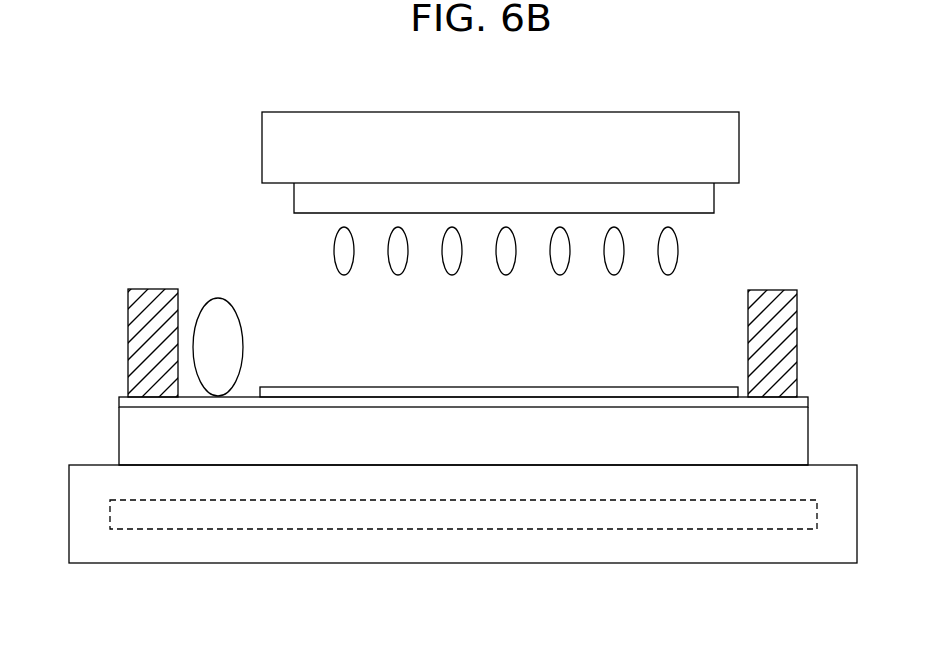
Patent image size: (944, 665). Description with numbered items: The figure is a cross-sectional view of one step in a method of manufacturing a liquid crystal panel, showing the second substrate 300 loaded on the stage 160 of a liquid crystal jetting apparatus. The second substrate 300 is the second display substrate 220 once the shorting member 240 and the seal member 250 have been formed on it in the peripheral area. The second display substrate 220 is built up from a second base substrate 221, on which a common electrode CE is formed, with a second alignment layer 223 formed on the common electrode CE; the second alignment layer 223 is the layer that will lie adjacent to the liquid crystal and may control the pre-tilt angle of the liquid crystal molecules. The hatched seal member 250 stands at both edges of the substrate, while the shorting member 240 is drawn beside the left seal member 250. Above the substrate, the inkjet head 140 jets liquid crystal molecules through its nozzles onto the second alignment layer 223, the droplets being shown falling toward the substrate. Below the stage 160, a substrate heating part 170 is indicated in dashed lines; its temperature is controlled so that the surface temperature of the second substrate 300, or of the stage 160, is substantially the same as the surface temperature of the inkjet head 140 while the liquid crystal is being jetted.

The inkjet head 140 is at (729, 148).
The seal member 250 is at (138, 346).
The shorting member 240 is at (218, 314).
The second alignment layer 223 is at (634, 390).
The common electrode CE is at (808, 401).
The second base substrate 221 is at (805, 440).
The second display substrate 220 is at (117, 398).
The second substrate 300 is at (857, 292).
The stage 160 is at (554, 546).
The substrate heating part 170 is at (384, 530).